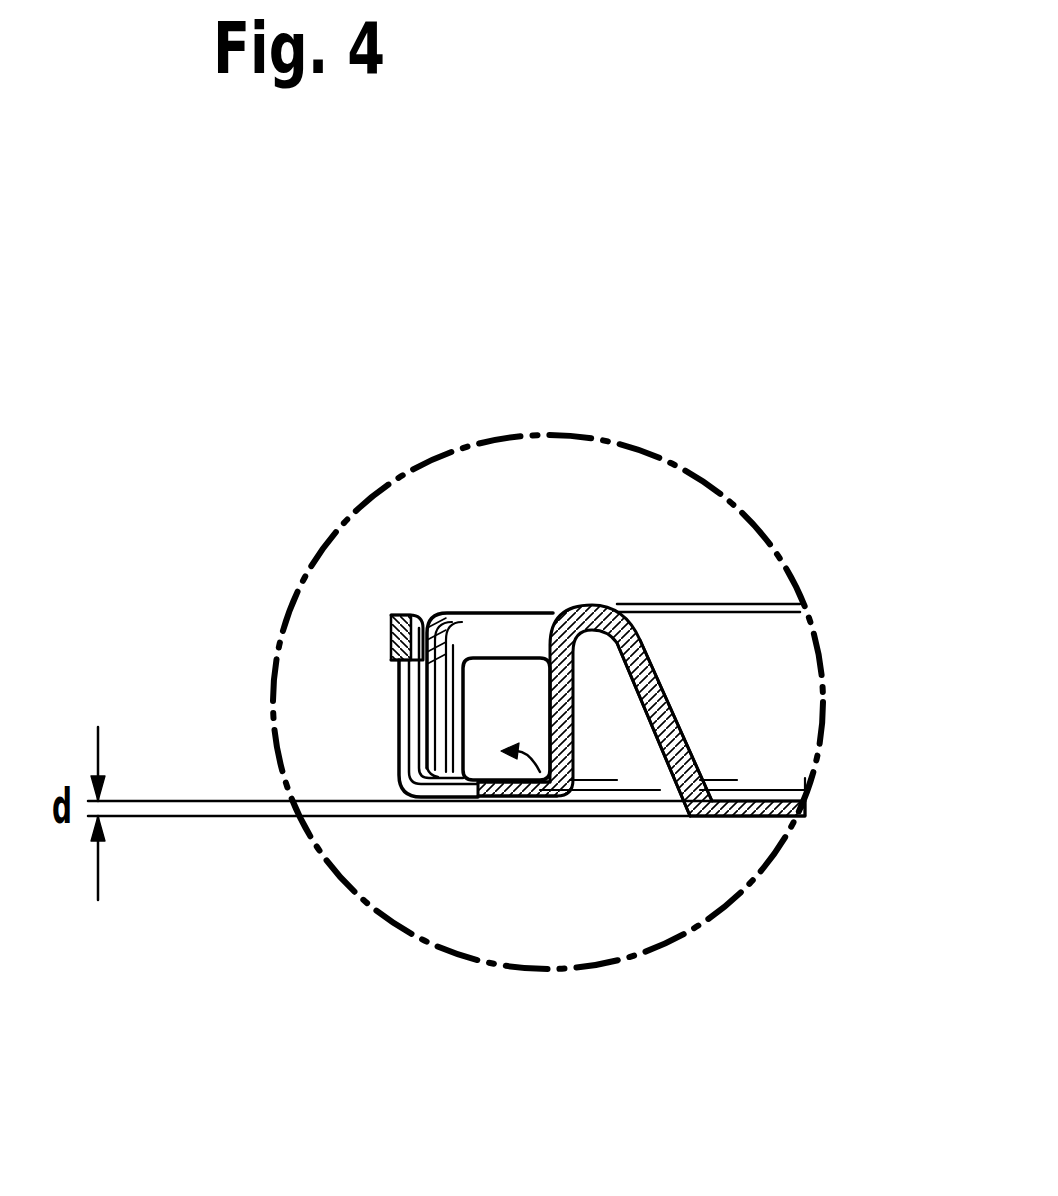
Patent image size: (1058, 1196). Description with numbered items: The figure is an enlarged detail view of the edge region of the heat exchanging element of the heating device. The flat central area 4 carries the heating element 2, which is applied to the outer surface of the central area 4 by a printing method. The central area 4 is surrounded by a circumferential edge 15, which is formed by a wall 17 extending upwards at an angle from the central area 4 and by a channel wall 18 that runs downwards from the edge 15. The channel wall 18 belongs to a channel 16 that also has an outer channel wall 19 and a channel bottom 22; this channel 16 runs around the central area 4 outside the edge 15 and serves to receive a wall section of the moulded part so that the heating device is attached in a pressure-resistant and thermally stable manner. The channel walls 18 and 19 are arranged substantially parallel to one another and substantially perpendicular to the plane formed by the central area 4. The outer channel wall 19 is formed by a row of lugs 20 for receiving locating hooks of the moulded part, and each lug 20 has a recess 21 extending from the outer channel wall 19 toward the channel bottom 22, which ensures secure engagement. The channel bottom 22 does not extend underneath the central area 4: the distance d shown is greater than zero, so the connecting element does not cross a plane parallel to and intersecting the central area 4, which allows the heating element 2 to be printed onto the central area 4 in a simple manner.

The heating element 2 is at (785, 818).
The central area 4 is at (727, 815).
The edge 15 is at (598, 610).
The channel 16 is at (553, 800).
The wall 17 is at (667, 713).
The channel wall 18 is at (528, 695).
The outer channel wall 19 is at (391, 630).
The lugs 20 is at (508, 630).
The recess 21 is at (487, 707).
The channel bottom 22 is at (490, 797).